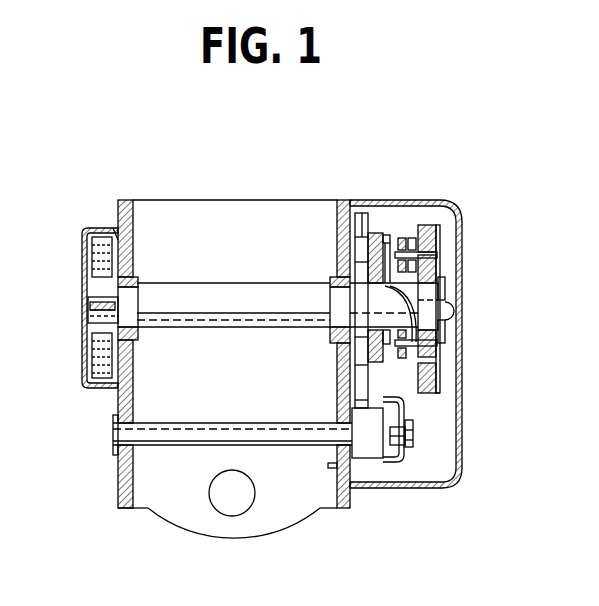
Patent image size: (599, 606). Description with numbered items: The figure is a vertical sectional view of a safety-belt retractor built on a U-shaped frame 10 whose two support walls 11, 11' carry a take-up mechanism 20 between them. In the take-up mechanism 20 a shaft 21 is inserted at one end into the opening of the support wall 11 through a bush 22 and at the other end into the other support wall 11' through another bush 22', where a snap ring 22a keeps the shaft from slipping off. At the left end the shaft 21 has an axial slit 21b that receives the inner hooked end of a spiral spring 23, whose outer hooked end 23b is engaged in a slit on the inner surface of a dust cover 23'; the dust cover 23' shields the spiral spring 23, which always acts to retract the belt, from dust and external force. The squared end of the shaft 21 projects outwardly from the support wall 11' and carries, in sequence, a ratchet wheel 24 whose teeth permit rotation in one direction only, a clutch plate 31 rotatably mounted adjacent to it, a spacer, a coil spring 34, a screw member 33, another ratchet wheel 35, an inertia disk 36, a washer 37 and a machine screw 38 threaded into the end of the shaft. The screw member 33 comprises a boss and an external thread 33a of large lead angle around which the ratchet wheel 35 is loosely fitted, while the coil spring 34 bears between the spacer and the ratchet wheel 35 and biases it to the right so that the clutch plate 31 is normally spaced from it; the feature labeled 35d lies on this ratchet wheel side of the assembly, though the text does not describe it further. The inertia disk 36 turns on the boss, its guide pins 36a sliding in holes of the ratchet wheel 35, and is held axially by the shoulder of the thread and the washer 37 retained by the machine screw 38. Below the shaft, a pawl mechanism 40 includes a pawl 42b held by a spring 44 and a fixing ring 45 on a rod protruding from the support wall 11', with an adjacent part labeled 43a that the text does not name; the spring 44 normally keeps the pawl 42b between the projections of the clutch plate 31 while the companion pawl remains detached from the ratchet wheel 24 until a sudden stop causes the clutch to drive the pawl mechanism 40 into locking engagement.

The frame 10 is at (184, 197).
The support wall 11 is at (123, 323).
The support wall 11' is at (338, 323).
The take-up mechanism 20 is at (195, 394).
The shaft 21 is at (222, 312).
The slit 21b is at (102, 302).
The bush 22 is at (147, 330).
The snap ring 22a is at (330, 337).
The bush 22' is at (320, 355).
The spiral spring 23 is at (75, 308).
The outer hooked end 23b is at (95, 312).
The dust cover 23' is at (85, 338).
The ratchet wheel 24 is at (362, 213).
The clutch plate 31 is at (378, 233).
The screw member 33 is at (405, 323).
The external thread 33a is at (383, 315).
The coil spring 34 is at (437, 362).
The ratchet wheel 35 is at (425, 225).
The magnet portion 35d is at (438, 347).
The inertia disk 36 is at (437, 232).
The guide pins 36a is at (437, 380).
The washer 37 is at (437, 290).
The machine screw 38 is at (447, 312).
The pawl mechanism 40 is at (483, 538).
The pawl 42b is at (360, 448).
The terminal 43a is at (383, 450).
The spring 44 is at (395, 462).
The fixing ring 45 is at (414, 420).